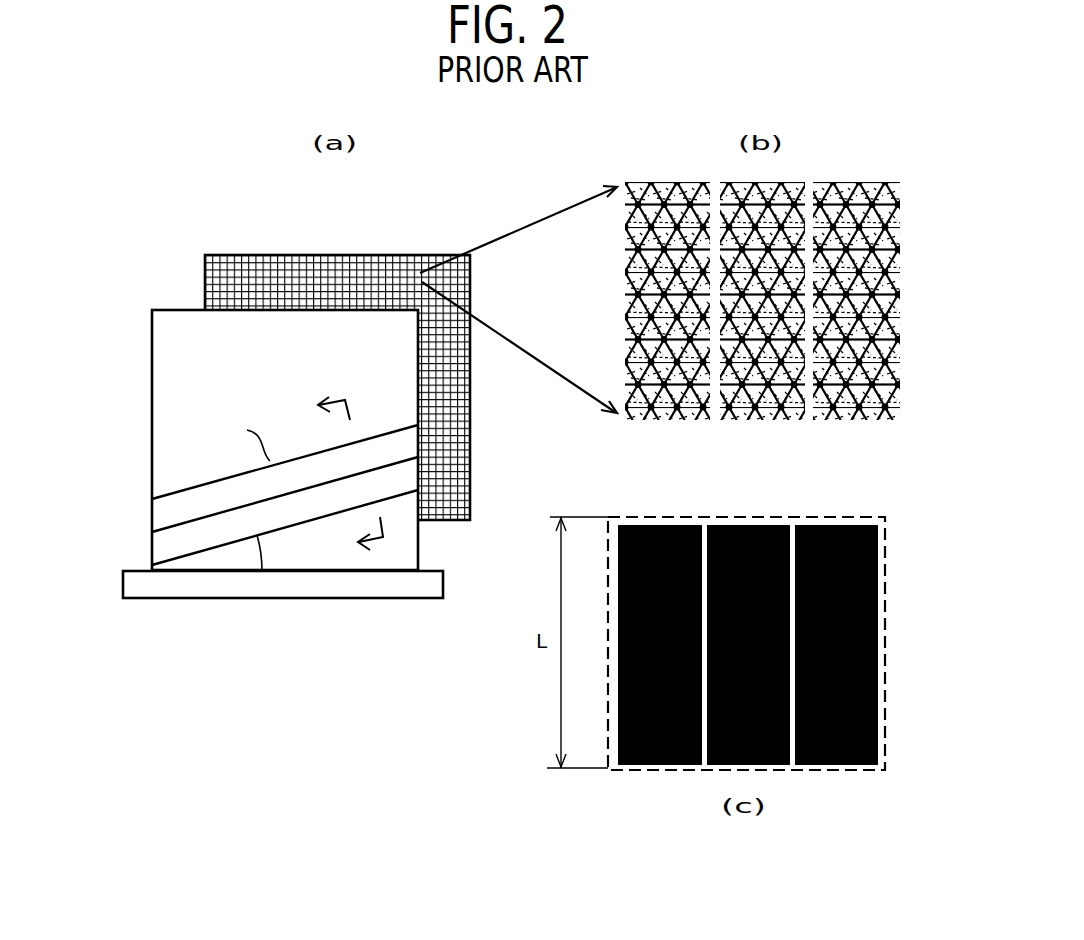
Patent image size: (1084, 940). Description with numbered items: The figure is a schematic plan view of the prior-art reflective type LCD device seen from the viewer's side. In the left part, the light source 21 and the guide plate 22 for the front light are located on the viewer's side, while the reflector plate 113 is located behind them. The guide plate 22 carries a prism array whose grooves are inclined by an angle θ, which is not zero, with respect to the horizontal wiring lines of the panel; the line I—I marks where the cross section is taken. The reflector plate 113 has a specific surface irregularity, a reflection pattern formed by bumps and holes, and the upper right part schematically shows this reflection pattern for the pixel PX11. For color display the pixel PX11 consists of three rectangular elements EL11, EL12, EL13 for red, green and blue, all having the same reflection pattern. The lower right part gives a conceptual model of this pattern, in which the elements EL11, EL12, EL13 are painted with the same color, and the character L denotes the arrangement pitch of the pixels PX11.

The reflector plate 113 is at (299, 255).
The guide plate 22 is at (190, 318).
The light source 21 is at (193, 591).
The pixel PX11 is at (620, 512).
The rectangular element EL11 is at (648, 420).
The rectangular element EL12 is at (737, 420).
The rectangular element EL13 is at (827, 420).